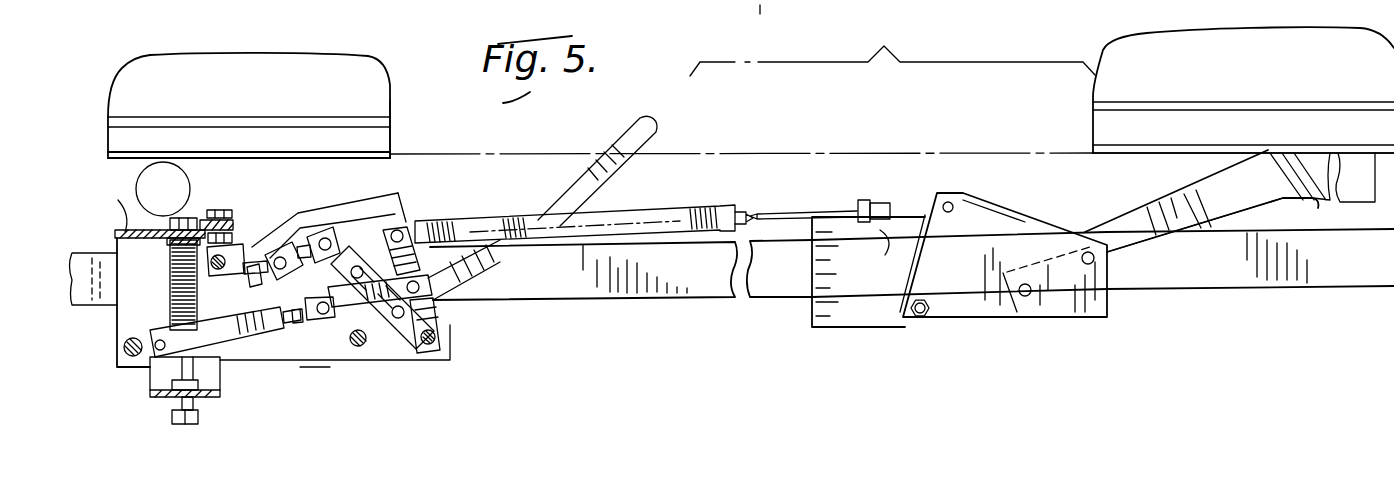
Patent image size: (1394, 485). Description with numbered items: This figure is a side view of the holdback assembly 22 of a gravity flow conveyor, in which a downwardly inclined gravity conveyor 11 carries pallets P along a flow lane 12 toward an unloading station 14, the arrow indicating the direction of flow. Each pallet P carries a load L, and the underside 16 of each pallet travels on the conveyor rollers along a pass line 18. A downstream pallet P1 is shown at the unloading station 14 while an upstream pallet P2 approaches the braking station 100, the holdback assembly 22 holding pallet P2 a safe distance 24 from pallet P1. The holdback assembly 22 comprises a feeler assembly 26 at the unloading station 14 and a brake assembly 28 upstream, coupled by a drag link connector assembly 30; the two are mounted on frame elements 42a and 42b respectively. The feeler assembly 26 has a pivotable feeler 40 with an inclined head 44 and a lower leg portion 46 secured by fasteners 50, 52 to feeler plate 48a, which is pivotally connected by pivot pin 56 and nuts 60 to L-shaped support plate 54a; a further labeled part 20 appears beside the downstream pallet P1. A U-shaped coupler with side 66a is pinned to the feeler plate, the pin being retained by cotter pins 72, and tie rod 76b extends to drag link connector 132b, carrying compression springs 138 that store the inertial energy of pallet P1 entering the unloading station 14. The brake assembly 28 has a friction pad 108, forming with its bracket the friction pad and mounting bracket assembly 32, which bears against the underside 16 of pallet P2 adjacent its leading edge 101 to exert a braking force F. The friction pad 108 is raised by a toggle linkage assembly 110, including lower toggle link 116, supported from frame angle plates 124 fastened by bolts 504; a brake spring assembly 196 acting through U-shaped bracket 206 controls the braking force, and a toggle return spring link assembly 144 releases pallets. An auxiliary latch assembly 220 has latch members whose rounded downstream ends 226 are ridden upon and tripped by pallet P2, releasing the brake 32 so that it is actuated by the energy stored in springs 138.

The gravity conveyor 11 is at (192, 172).
The flow lane 12 is at (856, 116).
The unloading station 14 is at (1270, 356).
The underside 16 is at (378, 158).
The pass line 18 is at (938, 152).
The frame junction 20 is at (1290, 168).
The holdback assembly 22 is at (700, 346).
The safe distance 24 is at (892, 42).
The feeler assembly 26 is at (1083, 229).
The brake assembly 28 is at (279, 186).
The drag link connector assembly 30 is at (728, 203).
The friction pad and mounting bracket assembly 32 is at (399, 196).
The feeler 40 is at (1164, 200).
The frame element 42a is at (1362, 277).
The frame element 42b is at (100, 302).
The inclined head 44 is at (1300, 197).
The lower leg portion 46 is at (1170, 249).
The feeler plate 48a is at (1097, 313).
The fastener 50 is at (1169, 221).
The fastener 52 is at (1033, 294).
The support plate 54a is at (852, 318).
The pivot pin 56 is at (923, 318).
The nut 60 is at (911, 311).
The side of U-shaped coupler 66a is at (853, 273).
The cotter pin 72 is at (947, 213).
The tie rod 76b is at (770, 212).
The braking station 100 is at (355, 411).
The leading edge 101 is at (391, 120).
The friction pad 108 is at (342, 208).
The toggle linkage assembly 110 is at (300, 290).
The lower toggle link 116 is at (360, 357).
The frame angle plates 124 is at (120, 206).
The rod sleeve 132b is at (600, 210).
The compression springs 138 is at (460, 219).
The toggle return spring link assembly 144 is at (237, 332).
The brake spring assembly 196 is at (166, 283).
The U-shaped bracket 206 is at (152, 380).
The auxiliary latch assembly 220 is at (480, 270).
The downstream end of latch member 226 is at (643, 124).
The bolt 504 is at (233, 212).
The braking force F is at (313, 205).
The load L is at (679, 105).
The pallet P is at (1088, 133).
The downstream pallet P1 is at (1243, 90).
The upstream pallet P2 is at (194, 133).